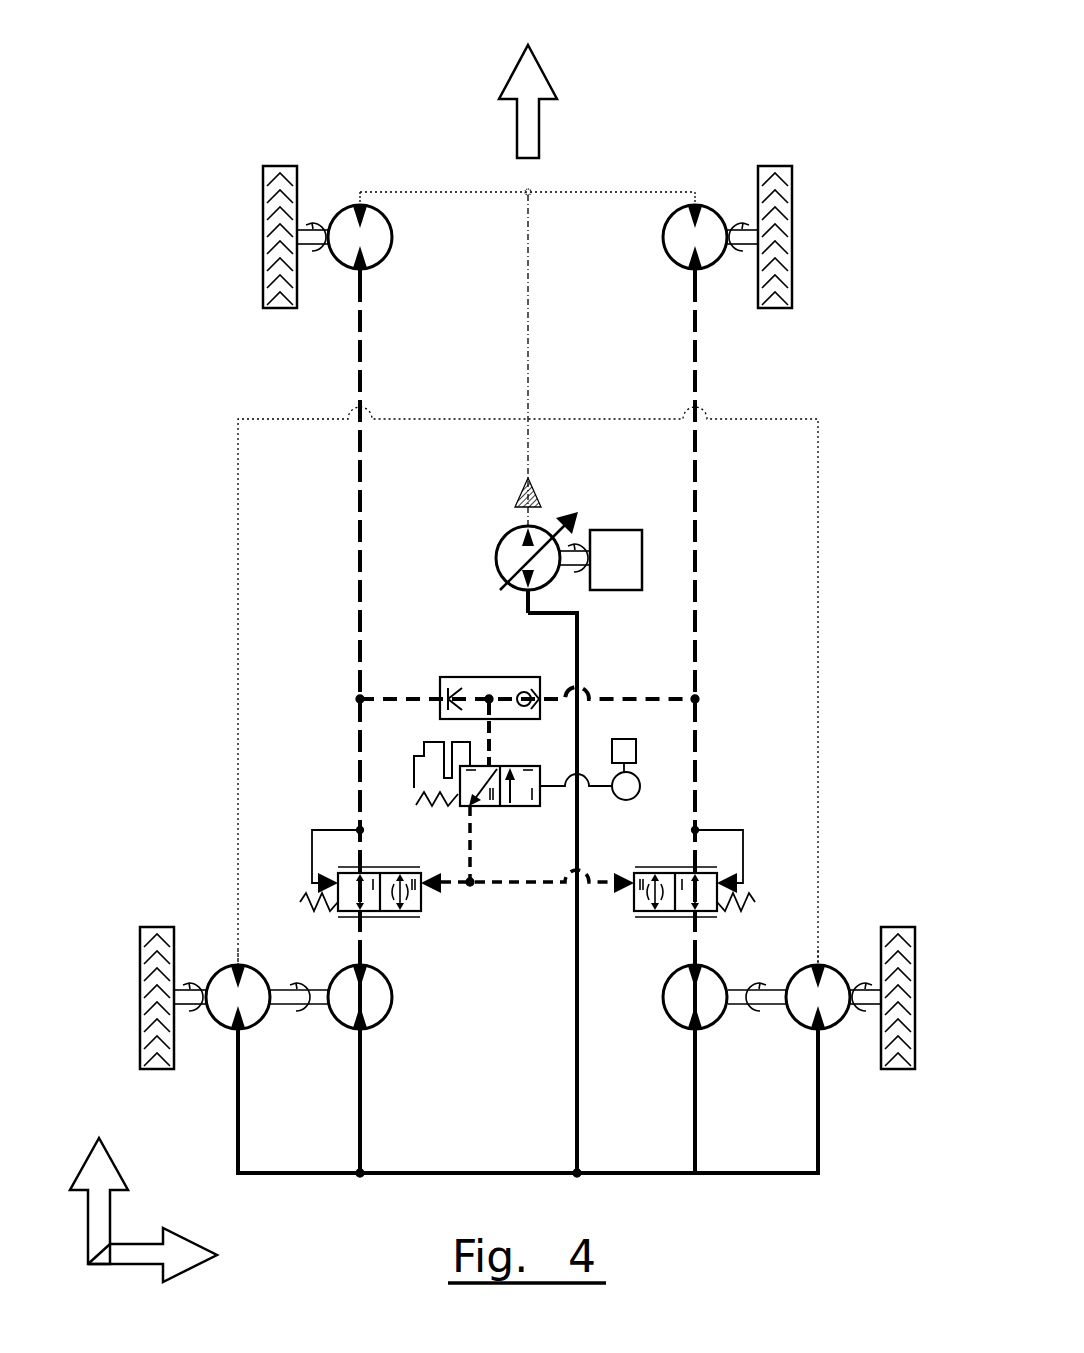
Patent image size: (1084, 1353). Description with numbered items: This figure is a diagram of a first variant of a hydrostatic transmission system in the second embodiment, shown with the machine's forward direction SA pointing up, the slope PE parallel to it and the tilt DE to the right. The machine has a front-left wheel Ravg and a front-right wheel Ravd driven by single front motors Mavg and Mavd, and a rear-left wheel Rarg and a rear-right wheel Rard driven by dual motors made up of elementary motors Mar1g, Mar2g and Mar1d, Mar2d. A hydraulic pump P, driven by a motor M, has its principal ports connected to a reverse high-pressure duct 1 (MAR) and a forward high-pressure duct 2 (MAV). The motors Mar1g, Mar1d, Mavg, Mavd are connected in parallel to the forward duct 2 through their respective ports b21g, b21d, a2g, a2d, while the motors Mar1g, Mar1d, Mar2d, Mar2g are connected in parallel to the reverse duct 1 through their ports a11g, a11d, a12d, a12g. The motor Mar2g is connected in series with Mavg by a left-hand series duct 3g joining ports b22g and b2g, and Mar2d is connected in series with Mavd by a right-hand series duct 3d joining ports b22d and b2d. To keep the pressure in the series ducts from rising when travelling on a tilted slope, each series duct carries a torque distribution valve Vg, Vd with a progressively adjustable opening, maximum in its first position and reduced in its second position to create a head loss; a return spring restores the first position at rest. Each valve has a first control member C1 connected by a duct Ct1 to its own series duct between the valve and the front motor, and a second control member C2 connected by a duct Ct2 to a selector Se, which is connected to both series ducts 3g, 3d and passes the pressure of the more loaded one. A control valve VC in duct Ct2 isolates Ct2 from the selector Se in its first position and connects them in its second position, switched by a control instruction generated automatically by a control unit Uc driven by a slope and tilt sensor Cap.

The reverse high-pressure duct 1 is at (581, 636).
The forward high-pressure duct 2 is at (531, 465).
The left-hand series duct 3g is at (360, 570).
The right-hand series duct 3d is at (695, 570).
The hydraulic pump P is at (497, 555).
The motor M is at (617, 530).
The selector Se is at (463, 677).
The control valve VC is at (515, 767).
The slope and tilt sensor Cap is at (636, 755).
The control unit Uc is at (622, 797).
The first control duct Ct1 is at (718, 830).
The second control duct Ct2 is at (470, 820).
The left torque distribution valve Vg is at (405, 917).
The right torque distribution valve Vd is at (650, 917).
The first control member C1 is at (316, 886).
The second control member C2 is at (430, 873).
The front-left wheel Ravg is at (283, 172).
The front-right wheel Ravd is at (775, 172).
The rear-left wheel Rarg is at (157, 927).
The rear-right wheel Rard is at (898, 927).
The front-left motor Mavg is at (370, 270).
The front-right motor Mavd is at (685, 270).
The first elementary motor of the rear-left dual motor Mar1g is at (250, 1028).
The second elementary motor of the rear-left dual motor Mar2g is at (372, 1028).
The first elementary motor of the rear-right dual motor Mar1d is at (830, 1028).
The second elementary motor of the rear-right dual motor Mar2d is at (707, 1028).
The port of front-left motor a2g is at (340, 196).
The port of front-left motor b2g is at (340, 277).
The port of front-right motor a2d is at (713, 196).
The port of front-right motor b2d is at (713, 277).
The port of first rear-left elementary motor a11g is at (221, 1038).
The port of first rear-left elementary motor b21g is at (221, 956).
The port of second rear-left elementary motor a12g is at (343, 1038).
The port of second rear-left elementary motor b22g is at (343, 956).
The port of first rear-right elementary motor a11d is at (801, 1038).
The port of first rear-right elementary motor b21d is at (801, 956).
The port of second rear-right elementary motor a12d is at (678, 1038).
The port of second rear-right elementary motor b22d is at (678, 956).
The direction of forward movement SA is at (528, 90).
The forward high-pressure duct designation MAV is at (511, 487).
The reverse high-pressure duct designation MAR is at (507, 603).
The slope PE is at (99, 1187).
The tilt DE is at (172, 1255).